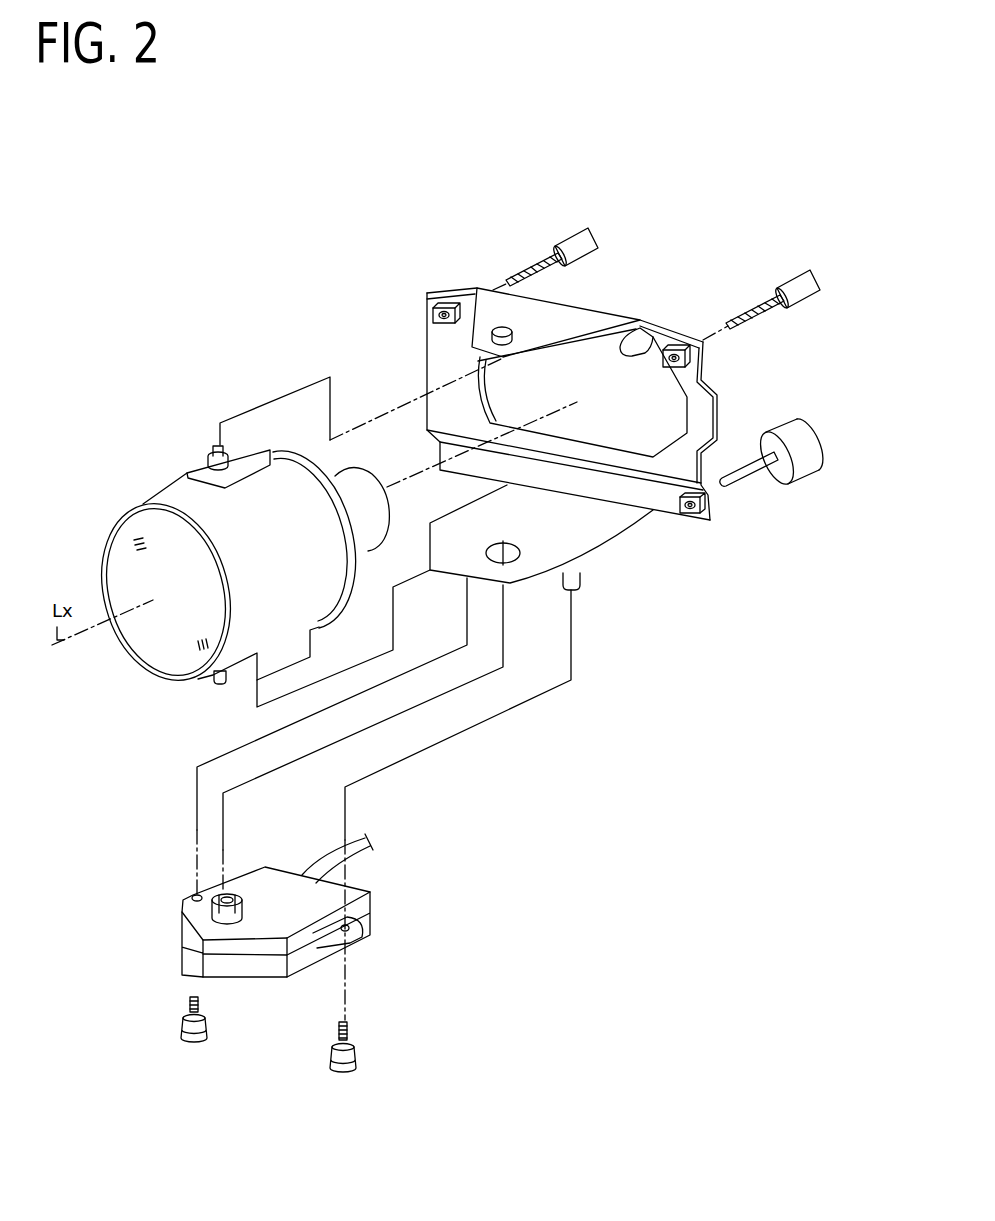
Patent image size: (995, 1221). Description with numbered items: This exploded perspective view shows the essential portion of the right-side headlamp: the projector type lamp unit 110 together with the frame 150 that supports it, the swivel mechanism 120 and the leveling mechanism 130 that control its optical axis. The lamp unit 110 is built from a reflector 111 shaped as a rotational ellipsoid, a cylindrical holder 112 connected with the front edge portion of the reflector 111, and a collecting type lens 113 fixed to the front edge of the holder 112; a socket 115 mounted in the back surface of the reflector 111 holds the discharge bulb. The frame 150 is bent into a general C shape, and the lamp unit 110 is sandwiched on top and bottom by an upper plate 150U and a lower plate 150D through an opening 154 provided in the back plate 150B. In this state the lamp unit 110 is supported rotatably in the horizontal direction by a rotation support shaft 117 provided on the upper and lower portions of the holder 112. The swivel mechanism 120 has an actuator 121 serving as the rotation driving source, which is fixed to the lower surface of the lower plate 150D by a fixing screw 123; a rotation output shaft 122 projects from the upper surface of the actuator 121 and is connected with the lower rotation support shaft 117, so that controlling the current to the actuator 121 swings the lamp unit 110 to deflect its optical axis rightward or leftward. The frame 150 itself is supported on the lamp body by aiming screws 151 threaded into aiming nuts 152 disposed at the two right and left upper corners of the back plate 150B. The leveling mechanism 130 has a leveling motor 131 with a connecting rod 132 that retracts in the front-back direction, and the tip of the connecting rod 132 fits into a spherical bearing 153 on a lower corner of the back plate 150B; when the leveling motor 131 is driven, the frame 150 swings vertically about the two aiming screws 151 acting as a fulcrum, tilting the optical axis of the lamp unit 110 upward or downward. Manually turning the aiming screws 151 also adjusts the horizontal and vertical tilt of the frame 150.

The lamp unit 110 is at (237, 548).
The reflector 111 is at (310, 470).
The holder 112 is at (314, 606).
The lens 113 is at (143, 630).
The socket 115 is at (370, 497).
The rotation support shaft 117 is at (214, 444).
The swivel mechanism 120 is at (296, 906).
The actuator 121 is at (320, 954).
The rotation output shaft 122 is at (222, 892).
The fixing screw 123 is at (196, 1040).
The leveling mechanism 130 is at (779, 501).
The leveling motor 131 is at (806, 462).
The connecting rod 132 is at (736, 492).
The frame 150 is at (569, 446).
The upper plate 150U is at (553, 327).
The back plate 150B is at (703, 420).
The lower plate 150D is at (603, 543).
The aiming screw 151 is at (585, 240).
The aiming nut 152 is at (438, 302).
The spherical bearing 153 is at (690, 512).
The opening 154 is at (638, 327).